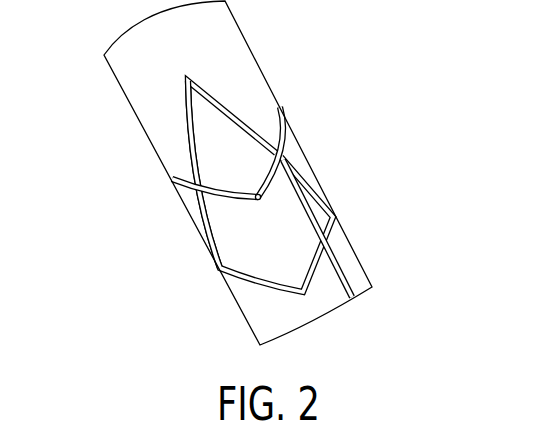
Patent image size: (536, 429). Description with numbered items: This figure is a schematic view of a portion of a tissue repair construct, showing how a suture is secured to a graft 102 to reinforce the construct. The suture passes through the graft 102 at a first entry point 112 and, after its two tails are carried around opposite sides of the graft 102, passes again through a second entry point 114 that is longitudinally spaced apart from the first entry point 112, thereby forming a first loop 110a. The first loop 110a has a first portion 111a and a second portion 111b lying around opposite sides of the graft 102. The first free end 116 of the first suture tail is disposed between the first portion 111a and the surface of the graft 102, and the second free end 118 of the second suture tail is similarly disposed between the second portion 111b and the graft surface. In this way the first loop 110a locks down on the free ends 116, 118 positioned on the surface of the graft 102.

The graft 102 is at (259, 84).
The first loop 110a is at (240, 161).
The first portion of the loop 111a is at (288, 133).
The second portion of the loop 111b is at (173, 188).
The first entry point 112 is at (189, 77).
The second entry point 114 is at (261, 203).
The first free end 116 is at (312, 207).
The second free end 118 is at (214, 239).